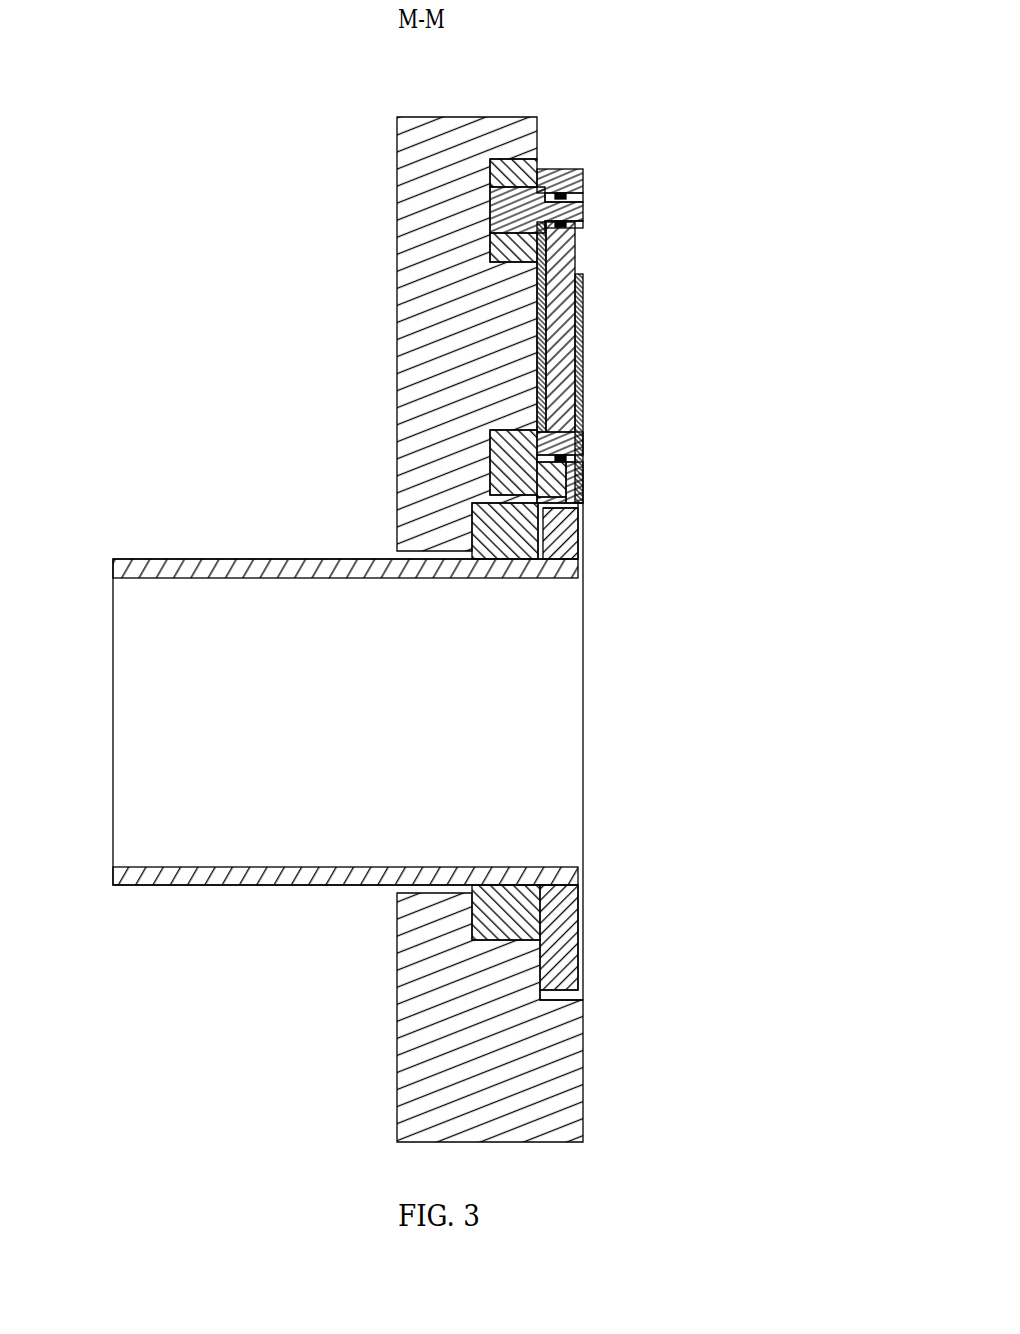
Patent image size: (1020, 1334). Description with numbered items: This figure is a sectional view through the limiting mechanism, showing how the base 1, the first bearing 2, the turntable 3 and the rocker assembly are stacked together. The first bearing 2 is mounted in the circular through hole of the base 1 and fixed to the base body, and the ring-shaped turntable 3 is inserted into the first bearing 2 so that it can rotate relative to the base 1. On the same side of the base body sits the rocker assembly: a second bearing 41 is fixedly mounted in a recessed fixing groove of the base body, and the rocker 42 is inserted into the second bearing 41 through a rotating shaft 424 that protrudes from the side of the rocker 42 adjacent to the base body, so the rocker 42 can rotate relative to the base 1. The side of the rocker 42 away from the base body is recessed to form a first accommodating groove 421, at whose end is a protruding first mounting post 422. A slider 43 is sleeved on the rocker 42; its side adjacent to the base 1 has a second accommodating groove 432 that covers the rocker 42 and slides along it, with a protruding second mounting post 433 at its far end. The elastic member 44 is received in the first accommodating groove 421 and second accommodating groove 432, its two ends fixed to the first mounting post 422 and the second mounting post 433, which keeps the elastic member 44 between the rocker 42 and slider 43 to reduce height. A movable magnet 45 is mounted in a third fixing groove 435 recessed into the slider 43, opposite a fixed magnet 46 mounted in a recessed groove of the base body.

The base 1 is at (457, 1018).
The first bearing 2 is at (467, 518).
The turntable 3 is at (560, 898).
The second bearing 41 is at (537, 160).
The rocker 42 is at (583, 175).
The first accommodating groove 421 is at (583, 225).
The first mounting post 422 is at (583, 206).
The rotating shaft 424 is at (490, 210).
The slider 43 is at (583, 368).
The second accommodating groove 432 is at (583, 435).
The second mounting post 433 is at (583, 450).
The third fixing groove 435 is at (578, 505).
The elastic member 44 is at (560, 313).
The movable magnet 45 is at (583, 485).
The fixed magnet 46 is at (490, 455).